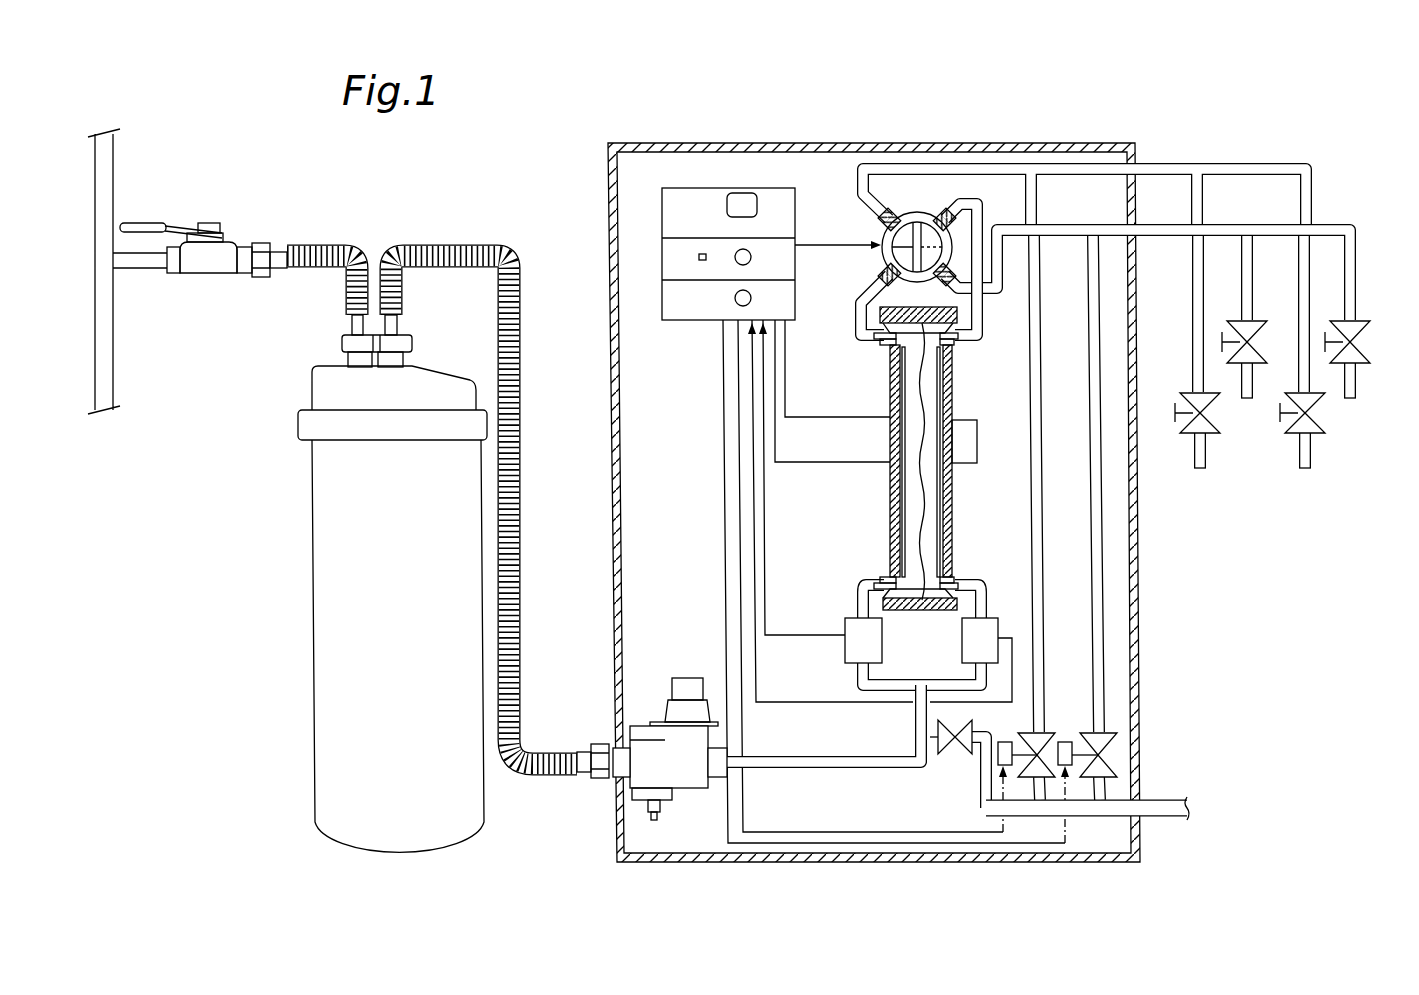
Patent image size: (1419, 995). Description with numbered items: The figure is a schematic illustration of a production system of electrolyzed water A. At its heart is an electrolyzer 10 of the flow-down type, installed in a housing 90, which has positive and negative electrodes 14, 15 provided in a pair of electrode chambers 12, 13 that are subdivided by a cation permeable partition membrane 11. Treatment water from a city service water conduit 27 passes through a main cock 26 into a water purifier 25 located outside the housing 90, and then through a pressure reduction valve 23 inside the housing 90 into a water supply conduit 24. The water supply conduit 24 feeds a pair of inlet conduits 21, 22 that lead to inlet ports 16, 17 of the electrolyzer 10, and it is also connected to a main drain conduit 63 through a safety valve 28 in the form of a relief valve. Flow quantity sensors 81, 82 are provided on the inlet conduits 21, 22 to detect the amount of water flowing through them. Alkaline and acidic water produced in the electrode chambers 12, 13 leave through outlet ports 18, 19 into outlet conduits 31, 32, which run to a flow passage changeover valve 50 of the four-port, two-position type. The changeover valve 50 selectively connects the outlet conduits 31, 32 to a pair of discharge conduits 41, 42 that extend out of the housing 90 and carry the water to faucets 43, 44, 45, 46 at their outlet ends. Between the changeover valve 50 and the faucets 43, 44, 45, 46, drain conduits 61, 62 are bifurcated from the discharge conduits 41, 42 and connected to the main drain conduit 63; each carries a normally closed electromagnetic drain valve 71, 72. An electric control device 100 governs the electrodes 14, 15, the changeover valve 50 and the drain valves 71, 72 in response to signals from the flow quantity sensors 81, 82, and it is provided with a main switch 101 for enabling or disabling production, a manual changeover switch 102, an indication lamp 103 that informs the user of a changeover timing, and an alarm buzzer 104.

The production system of electrolyzed water A is at (994, 473).
The electrolyzer 10 is at (920, 458).
The cation permeable partition membrane 11 is at (926, 386).
The electrode chamber 12 is at (897, 510).
The electrode chamber 13 is at (946, 510).
The positive electrode 14 is at (903, 445).
The negative electrode 15 is at (942, 440).
The inlet port 16 is at (892, 578).
The inlet port 17 is at (954, 578).
The outlet port 18 is at (886, 346).
The outlet port 19 is at (948, 346).
The inlet conduit 21 is at (860, 600).
The inlet conduit 22 is at (984, 598).
The pressure reduction valve 23 is at (690, 776).
The water supply conduit 24 is at (830, 764).
The water purifier 25 is at (322, 550).
The main cock 26 is at (207, 226).
The city service water conduit 27 is at (114, 163).
The safety valve 28 is at (962, 742).
The outlet conduit 31 is at (858, 328).
The outlet conduit 32 is at (980, 320).
The discharge conduit 41 is at (1158, 166).
The discharge conduit 42 is at (1152, 226).
The faucet 43 is at (1207, 414).
The faucet 44 is at (1312, 414).
The faucet 45 is at (1253, 336).
The faucet 46 is at (1352, 338).
The flow passage changeover valve 50 is at (905, 216).
The drain conduit 61 is at (1040, 548).
The drain conduit 62 is at (1096, 622).
The main drain conduit 63 is at (1085, 812).
The drain valve 71 is at (1038, 736).
The drain valve 72 is at (1100, 736).
The flow quantity sensor 81 is at (852, 656).
The flow quantity sensor 82 is at (968, 656).
The housing 90 is at (828, 143).
The electric control device 100 is at (751, 235).
The main switch 101 is at (757, 205).
The manual changeover switch 102 is at (751, 255).
The indication lamp 103 is at (698, 258).
The alarm buzzer 104 is at (751, 296).